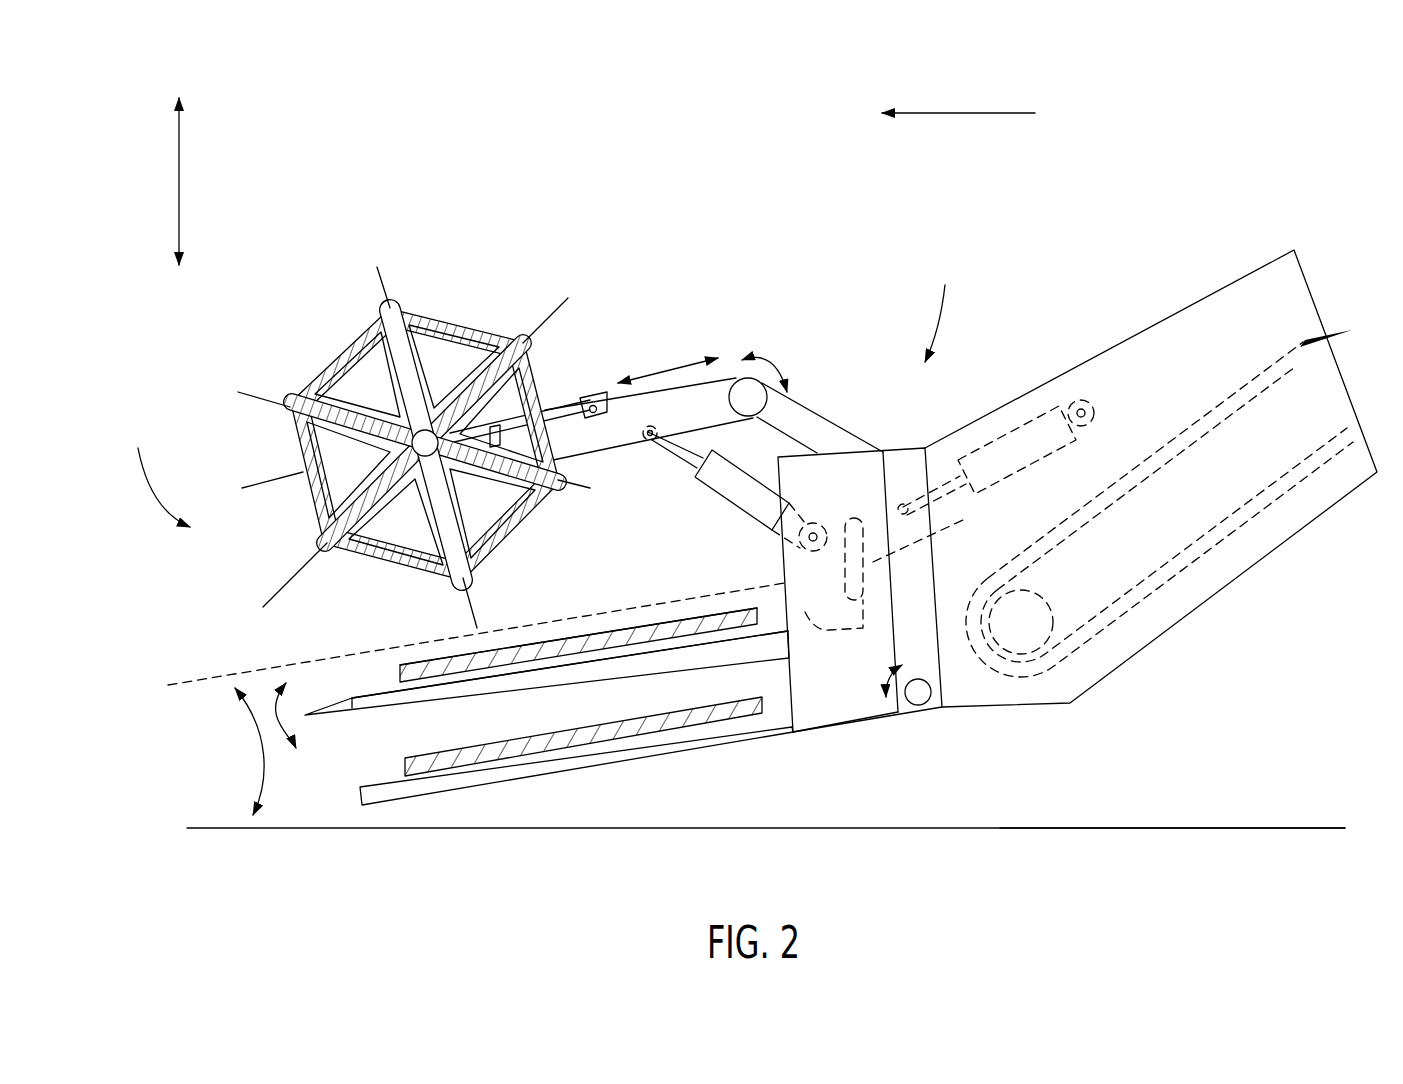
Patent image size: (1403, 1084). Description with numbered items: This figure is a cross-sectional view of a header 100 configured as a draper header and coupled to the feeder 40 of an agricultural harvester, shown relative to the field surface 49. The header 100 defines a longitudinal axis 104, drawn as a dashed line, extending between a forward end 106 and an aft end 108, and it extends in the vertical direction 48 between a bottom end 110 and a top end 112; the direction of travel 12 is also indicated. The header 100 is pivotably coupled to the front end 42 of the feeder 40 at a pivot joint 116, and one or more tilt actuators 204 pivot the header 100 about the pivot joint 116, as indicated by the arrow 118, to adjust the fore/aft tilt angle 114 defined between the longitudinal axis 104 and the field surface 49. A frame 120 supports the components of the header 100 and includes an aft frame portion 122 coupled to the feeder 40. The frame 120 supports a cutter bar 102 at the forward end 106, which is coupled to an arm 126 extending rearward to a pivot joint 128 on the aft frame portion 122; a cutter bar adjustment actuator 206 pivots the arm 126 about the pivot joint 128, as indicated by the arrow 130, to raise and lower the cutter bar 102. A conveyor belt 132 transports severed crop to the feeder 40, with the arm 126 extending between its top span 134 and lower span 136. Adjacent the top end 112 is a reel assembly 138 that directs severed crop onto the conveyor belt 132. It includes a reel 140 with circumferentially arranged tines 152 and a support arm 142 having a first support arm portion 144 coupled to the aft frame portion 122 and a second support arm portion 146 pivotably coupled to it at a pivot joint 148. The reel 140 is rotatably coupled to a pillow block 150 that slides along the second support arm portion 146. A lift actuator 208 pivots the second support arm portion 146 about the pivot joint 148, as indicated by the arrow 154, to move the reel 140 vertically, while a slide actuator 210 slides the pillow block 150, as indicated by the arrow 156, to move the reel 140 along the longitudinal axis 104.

The direction of travel 12 is at (957, 112).
The feeder 40 is at (1160, 632).
The front end of the feeder 42 is at (895, 450).
The vertical direction 48 is at (180, 167).
The field surface 49 is at (1070, 828).
The header 100 is at (468, 157).
The cutter bar 102 is at (342, 700).
The longitudinal axis 104 is at (198, 682).
The forward end of the header 106 is at (157, 470).
The aft end of the header 108 is at (944, 307).
The bottom end of the header 110 is at (677, 818).
The top end of the header 112 is at (714, 300).
The fore/aft tilt angle arrow 114 is at (258, 758).
The pivot joint 116 is at (922, 705).
The arrow 118 is at (890, 705).
The frame 120 is at (773, 762).
The aft frame portion 122 is at (845, 725).
The arm 126 is at (760, 650).
The pivot joint 128 is at (825, 630).
The arrow 130 is at (278, 735).
The conveyor belt 132 is at (560, 650).
The top span 134 is at (630, 630).
The lower span 136 is at (497, 757).
The reel assembly 138 is at (623, 267).
The reel 140 is at (335, 355).
The support arm 142 is at (740, 300).
The first support arm portion 144 is at (840, 427).
The second support arm portion 146 is at (613, 455).
The pivot joint 148 is at (768, 408).
The pillow block 150 is at (412, 443).
The tines 152 is at (387, 292).
The arrow 154 is at (778, 357).
The arrow 156 is at (665, 367).
The tilt actuator 204 is at (1010, 405).
The cutter bar adjustment actuator 206 is at (938, 532).
The lift actuator 208 is at (728, 476).
The slide actuator 210 is at (560, 408).